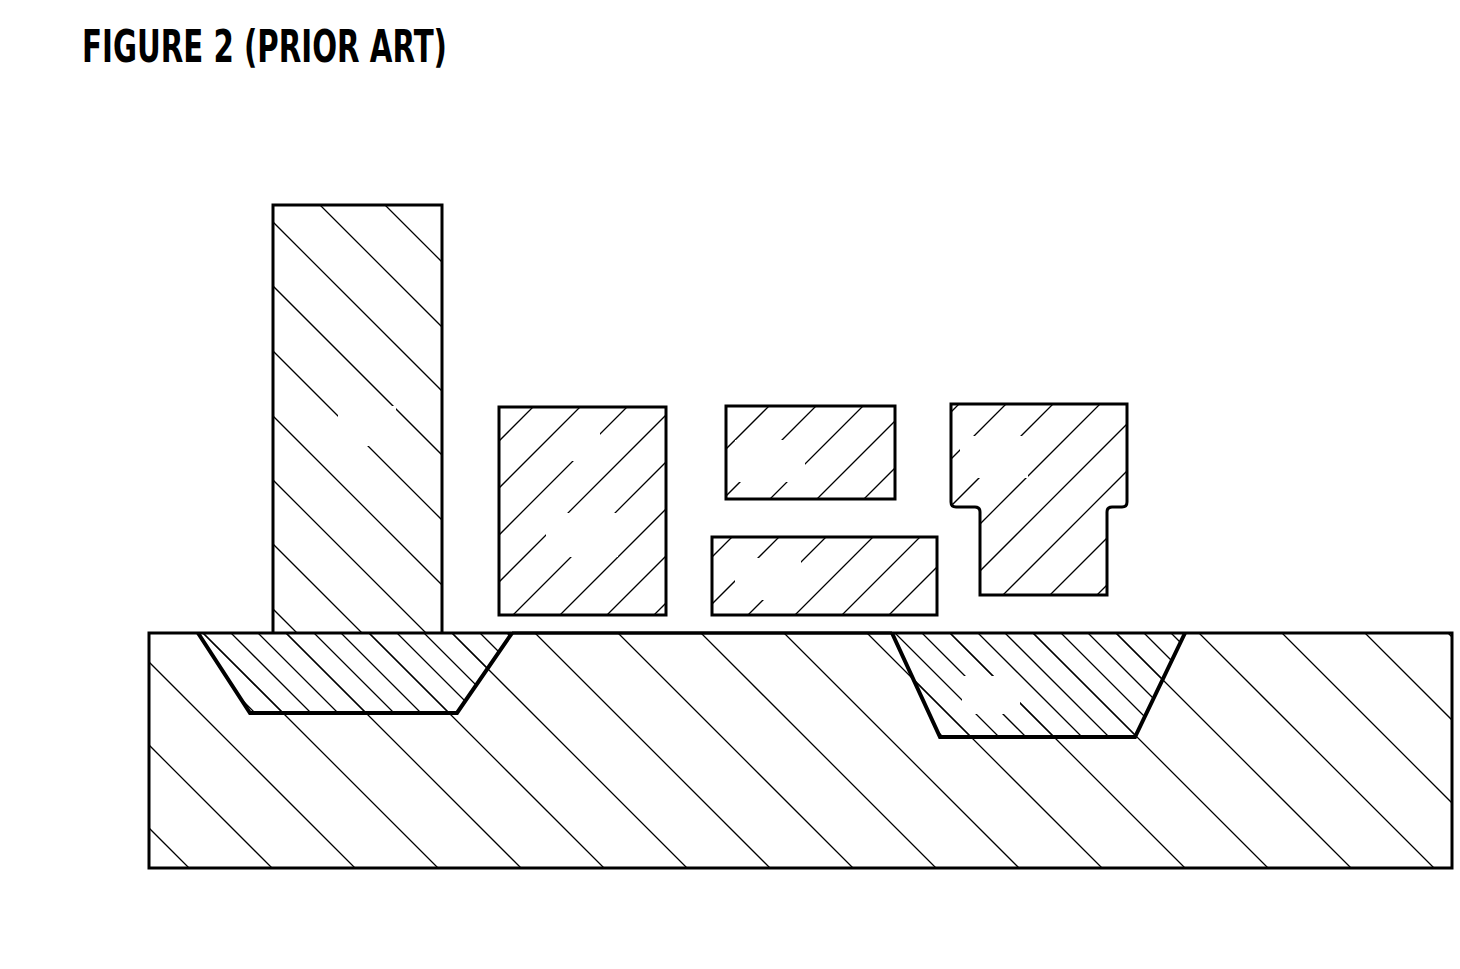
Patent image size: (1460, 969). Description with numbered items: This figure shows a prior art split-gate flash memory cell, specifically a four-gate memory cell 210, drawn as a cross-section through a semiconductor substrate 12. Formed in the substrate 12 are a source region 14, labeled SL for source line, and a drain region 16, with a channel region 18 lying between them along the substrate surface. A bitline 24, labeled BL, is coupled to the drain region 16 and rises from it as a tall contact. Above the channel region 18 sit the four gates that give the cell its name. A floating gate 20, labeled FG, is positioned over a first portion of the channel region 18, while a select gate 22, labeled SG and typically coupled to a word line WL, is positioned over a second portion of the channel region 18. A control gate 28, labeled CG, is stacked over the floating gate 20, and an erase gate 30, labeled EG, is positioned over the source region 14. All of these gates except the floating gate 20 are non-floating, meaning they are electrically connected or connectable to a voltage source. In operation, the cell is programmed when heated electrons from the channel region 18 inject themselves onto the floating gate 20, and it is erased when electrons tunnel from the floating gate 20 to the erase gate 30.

The semiconductor substrate 12 is at (1373, 800).
The source region 14 is at (1063, 681).
The drain region 16 is at (350, 688).
The channel region 18 is at (727, 680).
The floating gate 20 is at (863, 581).
The select gate 22 is at (562, 500).
The bitline 24 is at (378, 323).
The control gate 28 is at (820, 460).
The erase gate 30 is at (1050, 465).
The four-gate memory cell 210 is at (880, 183).